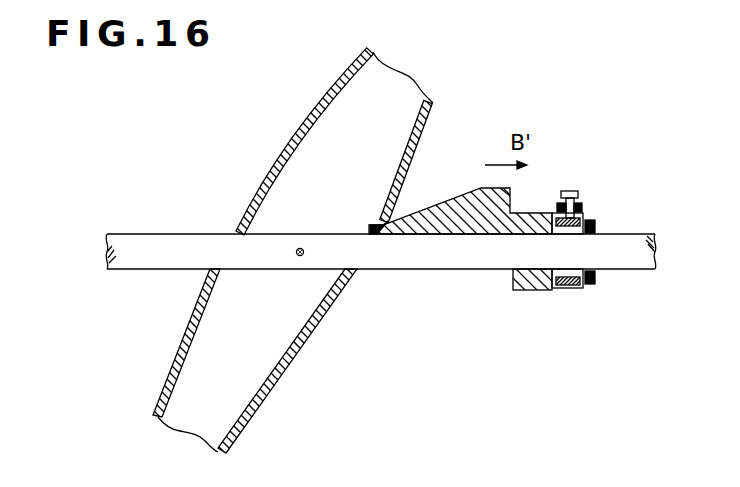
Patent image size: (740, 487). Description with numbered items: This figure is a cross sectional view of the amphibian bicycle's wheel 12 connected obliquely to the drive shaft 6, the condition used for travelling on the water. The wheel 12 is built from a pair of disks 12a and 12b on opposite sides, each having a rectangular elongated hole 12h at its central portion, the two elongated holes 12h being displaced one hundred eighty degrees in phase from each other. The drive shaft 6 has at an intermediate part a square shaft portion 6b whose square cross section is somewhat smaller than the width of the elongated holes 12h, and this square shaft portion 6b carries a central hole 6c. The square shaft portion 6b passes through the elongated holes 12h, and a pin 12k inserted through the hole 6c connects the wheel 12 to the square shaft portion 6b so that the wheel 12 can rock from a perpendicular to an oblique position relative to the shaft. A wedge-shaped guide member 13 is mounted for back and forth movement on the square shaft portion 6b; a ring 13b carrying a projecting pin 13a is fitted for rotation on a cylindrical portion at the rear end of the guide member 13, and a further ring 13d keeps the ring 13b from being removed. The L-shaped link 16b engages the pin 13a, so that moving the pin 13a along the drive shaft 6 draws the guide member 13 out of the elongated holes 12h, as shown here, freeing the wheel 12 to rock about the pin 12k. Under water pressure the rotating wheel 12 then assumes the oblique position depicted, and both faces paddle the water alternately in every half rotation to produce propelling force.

The drive shaft 6 is at (432, 271).
The square shaft portion 6b is at (274, 240).
The hole 6c is at (298, 257).
The wheel 12 is at (303, 114).
The disk 12a is at (313, 343).
The disk 12b is at (185, 340).
The elongated hole 12h is at (252, 207).
The pin 12k is at (303, 247).
The guide member 13 is at (445, 210).
The pin 13a is at (572, 191).
The ring 13b is at (573, 288).
The ring 13d is at (590, 284).
The L-shaped link 16b is at (582, 206).